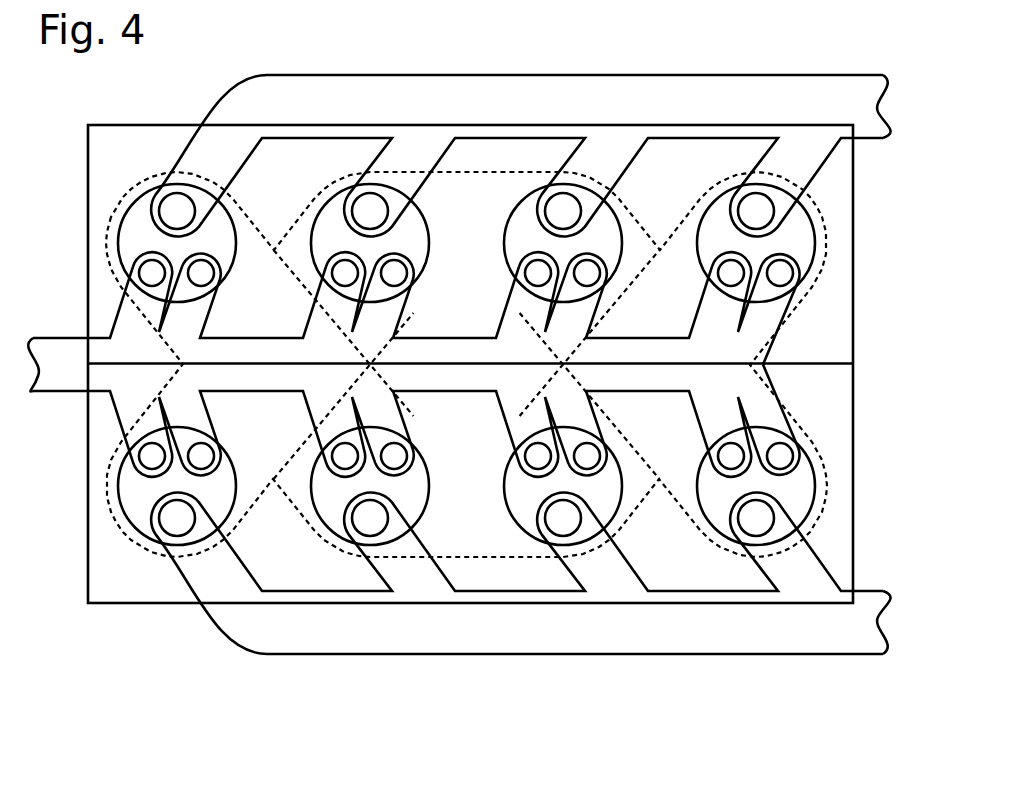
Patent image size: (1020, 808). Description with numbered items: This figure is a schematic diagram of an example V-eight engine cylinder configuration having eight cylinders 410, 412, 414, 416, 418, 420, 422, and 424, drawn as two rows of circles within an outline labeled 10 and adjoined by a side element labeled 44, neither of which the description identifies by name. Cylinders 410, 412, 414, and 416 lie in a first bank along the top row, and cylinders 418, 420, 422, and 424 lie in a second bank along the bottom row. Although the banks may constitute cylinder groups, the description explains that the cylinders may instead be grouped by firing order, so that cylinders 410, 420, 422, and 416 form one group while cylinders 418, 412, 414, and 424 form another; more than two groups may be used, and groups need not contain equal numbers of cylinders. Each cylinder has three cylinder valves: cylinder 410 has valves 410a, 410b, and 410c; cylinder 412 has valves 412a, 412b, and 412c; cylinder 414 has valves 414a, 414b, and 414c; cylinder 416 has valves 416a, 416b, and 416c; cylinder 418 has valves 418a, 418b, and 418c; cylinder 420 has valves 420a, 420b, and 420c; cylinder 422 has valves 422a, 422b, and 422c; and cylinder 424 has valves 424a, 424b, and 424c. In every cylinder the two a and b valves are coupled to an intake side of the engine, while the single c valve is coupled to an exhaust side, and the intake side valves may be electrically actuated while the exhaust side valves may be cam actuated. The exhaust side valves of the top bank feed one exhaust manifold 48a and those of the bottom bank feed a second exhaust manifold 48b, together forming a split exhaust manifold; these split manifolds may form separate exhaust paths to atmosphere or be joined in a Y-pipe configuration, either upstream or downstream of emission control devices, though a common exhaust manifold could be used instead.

The flexible substrate 10 is at (96, 125).
The common conductor 44 is at (78, 374).
The exhaust manifold 48a is at (878, 112).
The exhaust manifold 48b is at (875, 634).
The cylinder 410 is at (131, 208).
The intake side valve 410a is at (148, 270).
The intake side valve 410b is at (203, 278).
The exhaust side valve 410c is at (178, 206).
The cylinder 412 is at (323, 207).
The intake side valve 412a is at (345, 274).
The intake side valve 412b is at (396, 273).
The exhaust side valve 412c is at (371, 206).
The cylinder 414 is at (514, 208).
The intake side valve 414a is at (538, 273).
The intake side valve 414b is at (588, 278).
The exhaust side valve 414c is at (565, 206).
The cylinder 416 is at (711, 207).
The intake side valve 416a is at (733, 273).
The intake side valve 416b is at (784, 278).
The exhaust side valve 416c is at (757, 206).
The cylinder 418 is at (129, 521).
The intake side valve 418a is at (148, 457).
The intake side valve 418b is at (203, 450).
The exhaust side valve 418c is at (178, 523).
The cylinder 420 is at (323, 521).
The intake side valve 420a is at (344, 455).
The intake side valve 420b is at (396, 457).
The exhaust side valve 420c is at (371, 523).
The cylinder 422 is at (514, 522).
The intake side valve 422a is at (538, 456).
The intake side valve 422b is at (590, 450).
The exhaust side valve 422c is at (565, 523).
The cylinder 424 is at (711, 521).
The intake side valve 424a is at (733, 455).
The intake side valve 424b is at (786, 452).
The exhaust side valve 424c is at (757, 523).